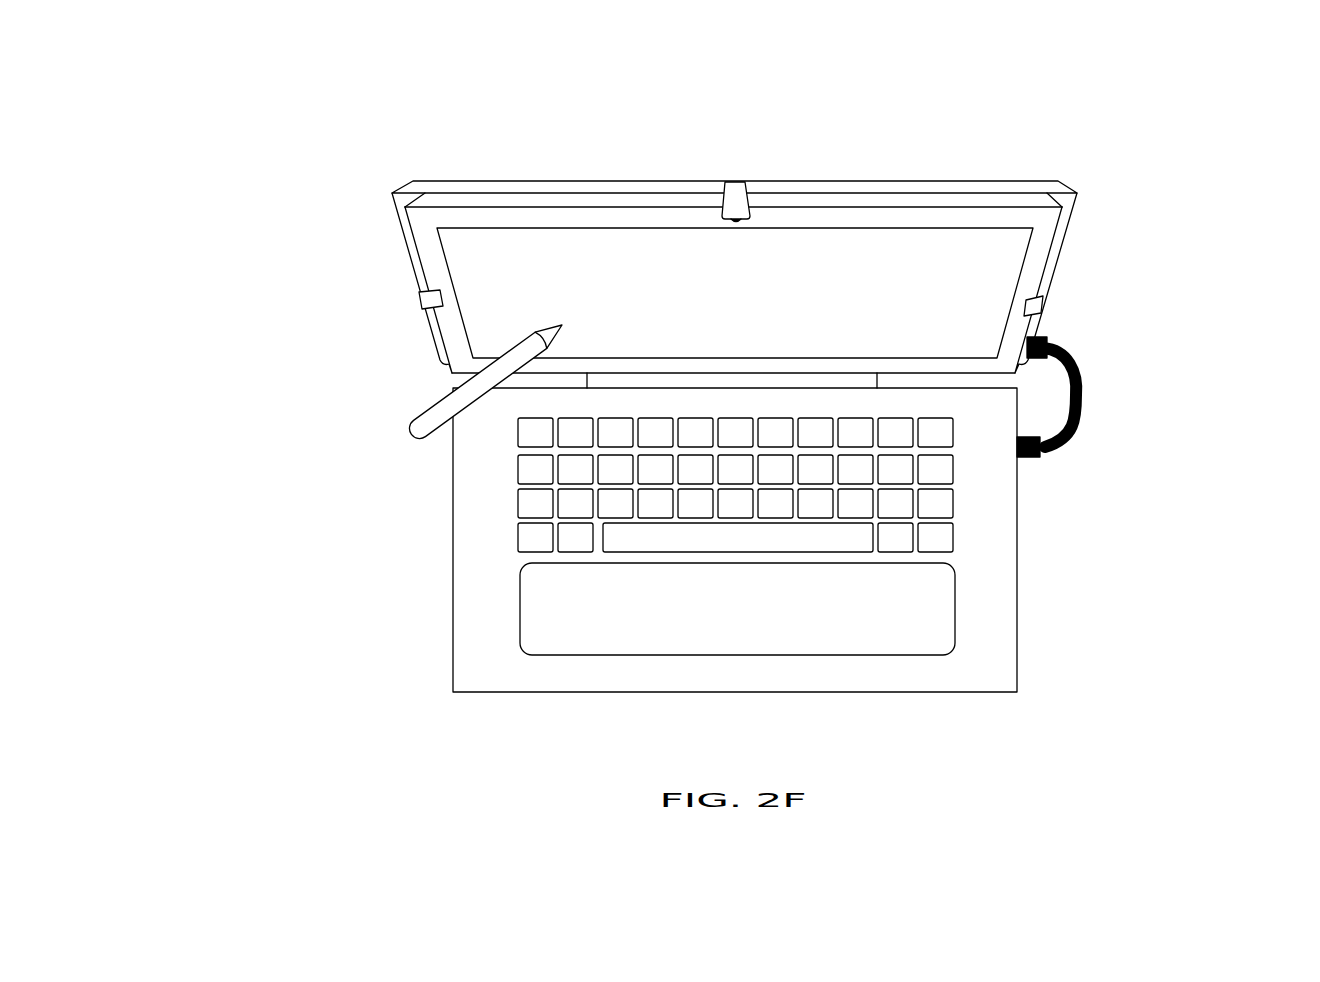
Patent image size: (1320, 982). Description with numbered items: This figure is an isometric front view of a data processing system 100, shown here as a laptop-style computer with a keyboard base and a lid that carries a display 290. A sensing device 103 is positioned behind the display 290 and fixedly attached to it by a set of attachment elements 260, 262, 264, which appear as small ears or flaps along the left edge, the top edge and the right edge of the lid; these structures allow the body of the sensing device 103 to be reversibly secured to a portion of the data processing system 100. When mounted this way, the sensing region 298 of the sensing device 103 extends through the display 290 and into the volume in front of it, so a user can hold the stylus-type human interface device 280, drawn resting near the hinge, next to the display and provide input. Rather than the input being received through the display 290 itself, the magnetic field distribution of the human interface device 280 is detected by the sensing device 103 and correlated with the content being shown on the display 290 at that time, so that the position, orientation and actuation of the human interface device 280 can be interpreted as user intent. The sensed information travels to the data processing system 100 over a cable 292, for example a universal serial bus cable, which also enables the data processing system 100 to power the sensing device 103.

The data processing system 100 is at (379, 562).
The sensing device 103 is at (378, 165).
The attachment element 260 is at (420, 298).
The attachment element 262 is at (737, 190).
The attachment element 264 is at (1040, 303).
The human interface device 280 is at (409, 378).
The display 290 is at (832, 323).
The cable 292 is at (1078, 432).
The sensing region 298 is at (992, 279).